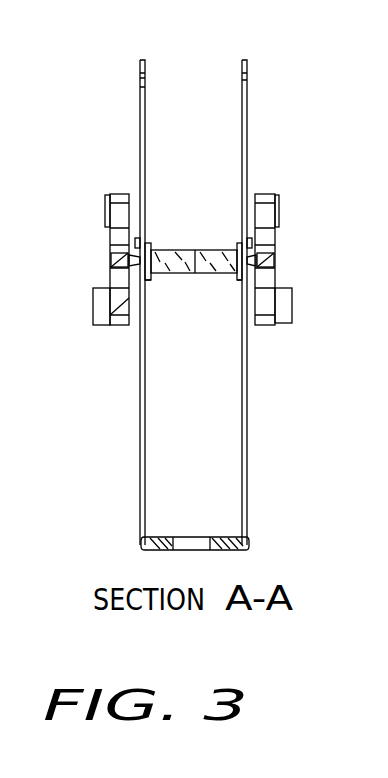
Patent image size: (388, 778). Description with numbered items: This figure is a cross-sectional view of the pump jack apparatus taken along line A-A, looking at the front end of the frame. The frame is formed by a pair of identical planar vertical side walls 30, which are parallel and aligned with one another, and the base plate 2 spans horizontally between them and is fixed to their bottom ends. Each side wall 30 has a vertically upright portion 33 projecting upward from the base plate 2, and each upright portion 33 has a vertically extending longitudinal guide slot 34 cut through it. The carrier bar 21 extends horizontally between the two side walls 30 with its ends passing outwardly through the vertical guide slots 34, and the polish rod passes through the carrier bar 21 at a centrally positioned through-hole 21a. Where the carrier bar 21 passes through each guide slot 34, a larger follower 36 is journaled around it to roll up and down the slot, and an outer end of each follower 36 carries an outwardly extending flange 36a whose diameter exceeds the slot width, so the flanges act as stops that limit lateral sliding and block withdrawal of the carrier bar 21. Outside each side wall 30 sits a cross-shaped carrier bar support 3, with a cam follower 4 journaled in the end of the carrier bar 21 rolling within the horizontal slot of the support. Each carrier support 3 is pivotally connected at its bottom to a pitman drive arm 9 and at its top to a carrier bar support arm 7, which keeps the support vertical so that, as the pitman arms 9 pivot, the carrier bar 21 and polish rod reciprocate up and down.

The base plate 2 is at (227, 548).
The carrier bar support 3 is at (122, 325).
The cam follower 4 is at (111, 262).
The carrier bar support arm 7 is at (106, 197).
The pitman drive arm 9 is at (95, 324).
The carrier bar 21 is at (178, 275).
The through-hole 21a is at (195, 250).
The side wall 30 is at (245, 306).
The upright portion 33 is at (247, 68).
The guide slot 34 is at (143, 172).
The follower 36 is at (238, 244).
The flange 36a is at (240, 296).